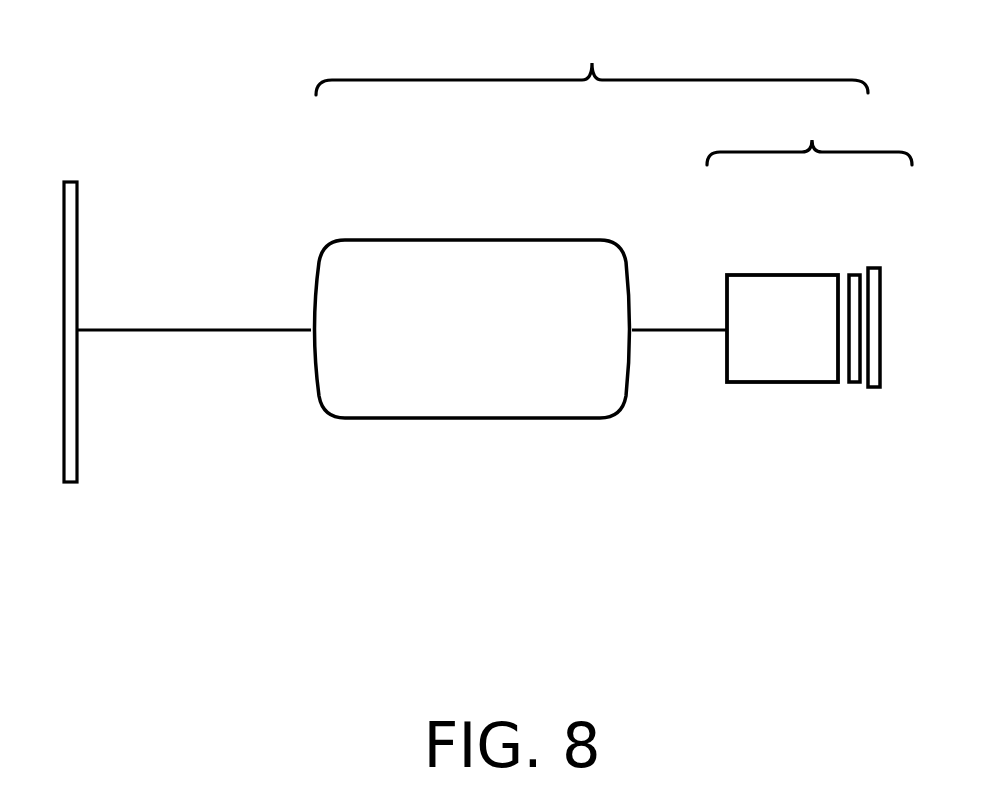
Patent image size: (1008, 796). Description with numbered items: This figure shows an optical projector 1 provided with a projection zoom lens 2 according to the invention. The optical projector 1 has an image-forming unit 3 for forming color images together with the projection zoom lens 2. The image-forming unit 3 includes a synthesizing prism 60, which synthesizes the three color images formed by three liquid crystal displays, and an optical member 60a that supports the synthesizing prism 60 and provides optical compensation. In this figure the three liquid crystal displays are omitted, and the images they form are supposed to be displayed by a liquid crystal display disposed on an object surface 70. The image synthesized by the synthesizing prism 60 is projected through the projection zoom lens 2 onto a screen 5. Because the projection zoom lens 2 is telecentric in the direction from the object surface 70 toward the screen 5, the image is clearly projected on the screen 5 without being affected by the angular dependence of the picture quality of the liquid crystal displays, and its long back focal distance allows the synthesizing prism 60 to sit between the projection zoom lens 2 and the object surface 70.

The optical projector 1 is at (592, 58).
The projection zoom lens 2 is at (543, 240).
The image-forming unit 3 is at (809, 125).
The screen 5 is at (77, 200).
The synthesizing prism 60 is at (741, 275).
The optical member 60a is at (854, 275).
The object surface 70 is at (873, 268).